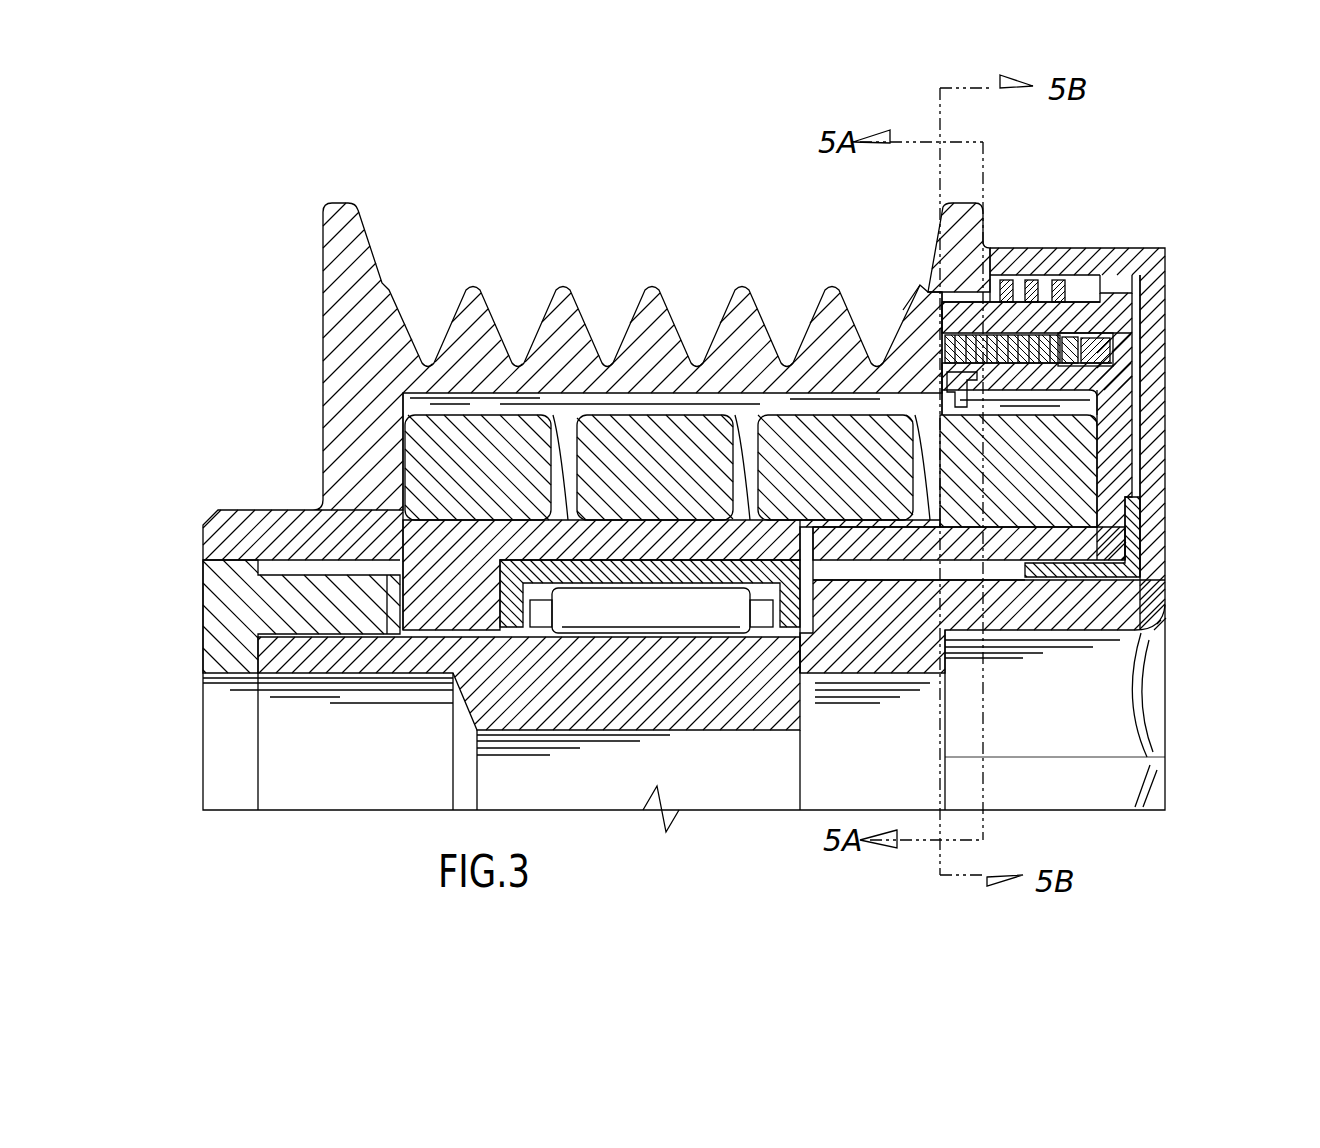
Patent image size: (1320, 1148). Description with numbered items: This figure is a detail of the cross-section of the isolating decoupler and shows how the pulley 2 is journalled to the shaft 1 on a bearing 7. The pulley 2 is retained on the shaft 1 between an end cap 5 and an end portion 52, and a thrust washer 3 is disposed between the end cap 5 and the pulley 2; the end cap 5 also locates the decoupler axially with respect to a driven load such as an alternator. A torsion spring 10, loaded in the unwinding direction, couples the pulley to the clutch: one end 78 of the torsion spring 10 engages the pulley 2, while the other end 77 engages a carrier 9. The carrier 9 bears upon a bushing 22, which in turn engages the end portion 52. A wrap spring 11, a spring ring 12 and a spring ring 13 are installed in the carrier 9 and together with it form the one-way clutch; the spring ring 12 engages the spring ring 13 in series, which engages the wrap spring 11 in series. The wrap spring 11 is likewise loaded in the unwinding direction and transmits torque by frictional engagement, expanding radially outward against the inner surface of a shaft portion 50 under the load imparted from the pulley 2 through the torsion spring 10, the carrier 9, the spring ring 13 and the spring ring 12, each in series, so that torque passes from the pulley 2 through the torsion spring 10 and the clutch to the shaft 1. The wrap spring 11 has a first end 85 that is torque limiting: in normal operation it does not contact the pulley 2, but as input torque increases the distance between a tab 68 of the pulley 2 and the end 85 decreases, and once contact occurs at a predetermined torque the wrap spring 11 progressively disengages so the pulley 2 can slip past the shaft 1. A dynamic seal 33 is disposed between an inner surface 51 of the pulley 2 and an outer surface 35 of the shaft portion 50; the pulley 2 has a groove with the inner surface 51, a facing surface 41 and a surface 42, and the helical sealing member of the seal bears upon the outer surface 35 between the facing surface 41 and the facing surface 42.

The shaft 1 is at (1157, 677).
The pulley 2 is at (343, 382).
The thrust washer 3 is at (387, 597).
The end cap 5 is at (245, 603).
The bearing 7 is at (617, 610).
The carrier 9 is at (1120, 452).
The torsion spring 10 is at (607, 437).
The wrap spring 11 is at (1050, 337).
The spring ring 12 is at (1130, 345).
The spring ring 13 is at (1103, 363).
The bushing 22 is at (1132, 538).
The dynamic seal 33 is at (1040, 282).
The outer surface 35 is at (1125, 300).
The facing surface 41 is at (983, 277).
The surface 42 is at (1105, 280).
The shaft portion 50 is at (937, 307).
The inner surface 51 is at (1010, 270).
The end portion 52 is at (1165, 397).
The tab 68 is at (920, 400).
The end 77 is at (1072, 482).
The end 78 is at (440, 462).
The first end 85 is at (933, 372).